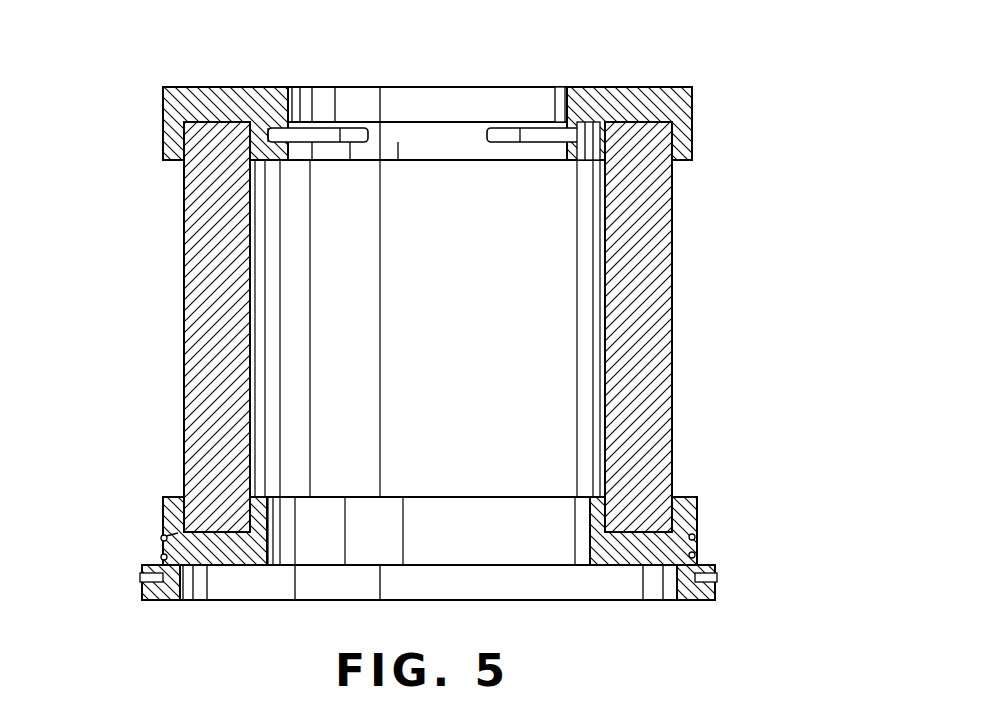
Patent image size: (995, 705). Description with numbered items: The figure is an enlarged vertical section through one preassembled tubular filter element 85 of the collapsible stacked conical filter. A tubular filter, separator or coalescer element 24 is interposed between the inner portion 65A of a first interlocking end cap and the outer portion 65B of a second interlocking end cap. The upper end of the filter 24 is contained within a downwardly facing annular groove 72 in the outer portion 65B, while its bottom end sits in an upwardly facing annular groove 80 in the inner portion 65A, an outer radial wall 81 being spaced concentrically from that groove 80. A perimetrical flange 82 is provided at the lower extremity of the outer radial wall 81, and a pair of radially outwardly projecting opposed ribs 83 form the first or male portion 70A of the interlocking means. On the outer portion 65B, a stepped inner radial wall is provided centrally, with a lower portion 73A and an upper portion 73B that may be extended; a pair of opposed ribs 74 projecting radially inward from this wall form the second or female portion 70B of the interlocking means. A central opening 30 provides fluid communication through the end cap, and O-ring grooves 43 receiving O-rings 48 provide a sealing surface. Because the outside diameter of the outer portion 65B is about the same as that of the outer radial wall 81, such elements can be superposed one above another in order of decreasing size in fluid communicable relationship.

The filter 24 is at (663, 288).
The central opening 30 is at (258, 527).
The O-ring grooves 43 is at (168, 557).
The O-rings 48 is at (695, 555).
The inner portion of connecting end cap 65A is at (423, 609).
The outer portion of connecting end cap 65B is at (679, 88).
The male portion of interlocking means 70A is at (158, 540).
The female portion of interlocking means 70B is at (520, 136).
The downwardly facing groove 72 is at (212, 124).
The lower portion of inner radial wall 73A is at (582, 137).
The upper portion of inner radial wall 73B is at (565, 107).
The opposed ribs 74 is at (280, 133).
The upwardly facing annular groove 80 is at (637, 523).
The outer radial wall 81 is at (163, 512).
The perimetrical flange 82 is at (143, 599).
The radially outwardly projecting opposed ribs 83 is at (140, 576).
The tubular filter element 85 is at (116, 289).